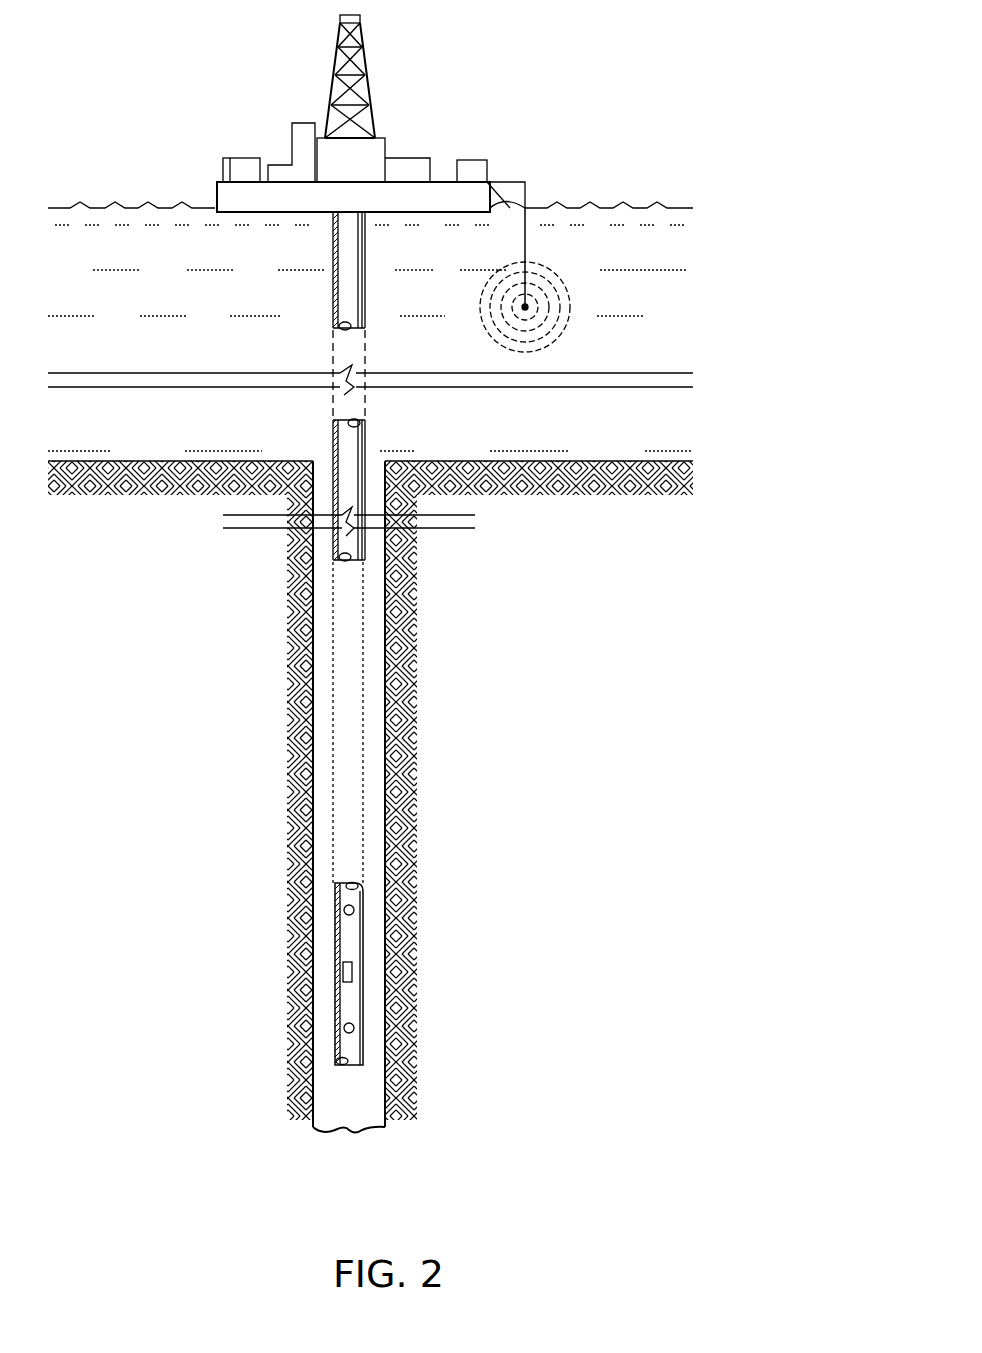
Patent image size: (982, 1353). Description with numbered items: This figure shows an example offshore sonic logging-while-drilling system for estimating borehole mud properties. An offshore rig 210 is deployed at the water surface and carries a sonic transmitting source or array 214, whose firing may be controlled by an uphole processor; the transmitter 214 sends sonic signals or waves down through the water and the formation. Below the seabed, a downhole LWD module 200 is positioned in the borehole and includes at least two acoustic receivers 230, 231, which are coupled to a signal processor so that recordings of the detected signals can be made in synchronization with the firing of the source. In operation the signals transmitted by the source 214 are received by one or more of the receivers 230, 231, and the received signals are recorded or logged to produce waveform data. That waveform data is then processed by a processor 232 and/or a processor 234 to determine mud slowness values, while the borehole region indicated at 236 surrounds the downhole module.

The downhole LWD module 200 is at (341, 974).
The offshore rig 210 is at (440, 138).
The sonic transmitting source or array 214 is at (527, 308).
The acoustic receiver 230 is at (345, 1028).
The acoustic receiver 231 is at (345, 910).
The processor 232 is at (343, 965).
The processor 234 is at (488, 180).
The borehole 236 is at (368, 918).